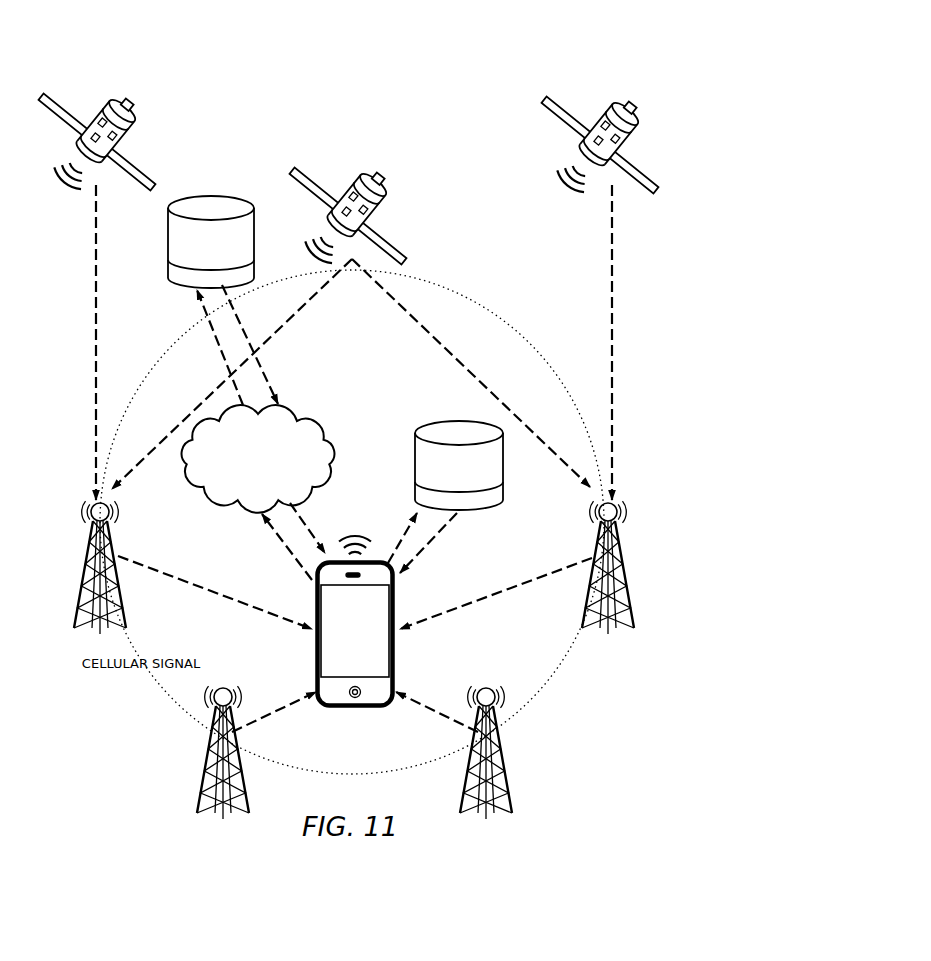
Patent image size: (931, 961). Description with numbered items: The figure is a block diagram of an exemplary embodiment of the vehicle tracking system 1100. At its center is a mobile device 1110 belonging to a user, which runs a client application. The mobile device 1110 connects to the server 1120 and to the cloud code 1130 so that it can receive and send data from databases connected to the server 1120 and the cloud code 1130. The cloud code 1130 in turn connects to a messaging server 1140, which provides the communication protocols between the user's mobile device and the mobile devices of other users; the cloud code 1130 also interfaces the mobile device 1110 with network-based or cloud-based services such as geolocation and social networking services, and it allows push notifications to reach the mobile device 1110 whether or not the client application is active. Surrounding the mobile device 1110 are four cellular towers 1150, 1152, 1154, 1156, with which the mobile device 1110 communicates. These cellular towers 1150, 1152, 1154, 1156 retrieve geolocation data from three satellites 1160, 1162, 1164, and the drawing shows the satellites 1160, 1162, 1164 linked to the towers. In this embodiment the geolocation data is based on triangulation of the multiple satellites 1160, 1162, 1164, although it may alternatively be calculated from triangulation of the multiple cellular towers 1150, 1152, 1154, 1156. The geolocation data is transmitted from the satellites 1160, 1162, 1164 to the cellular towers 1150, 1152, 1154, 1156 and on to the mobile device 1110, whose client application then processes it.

The vehicle tracking system 1100 is at (460, 28).
The mobile device 1110 is at (396, 660).
The server 1120 is at (414, 447).
The cloud code 1130 is at (258, 459).
The messaging server 1140 is at (167, 224).
The cellular tower 1150 is at (90, 548).
The cellular tower 1152 is at (210, 746).
The cellular tower 1154 is at (500, 748).
The cellular tower 1156 is at (620, 556).
The satellite 1160 is at (134, 134).
The satellite 1162 is at (386, 208).
The satellite 1164 is at (636, 135).